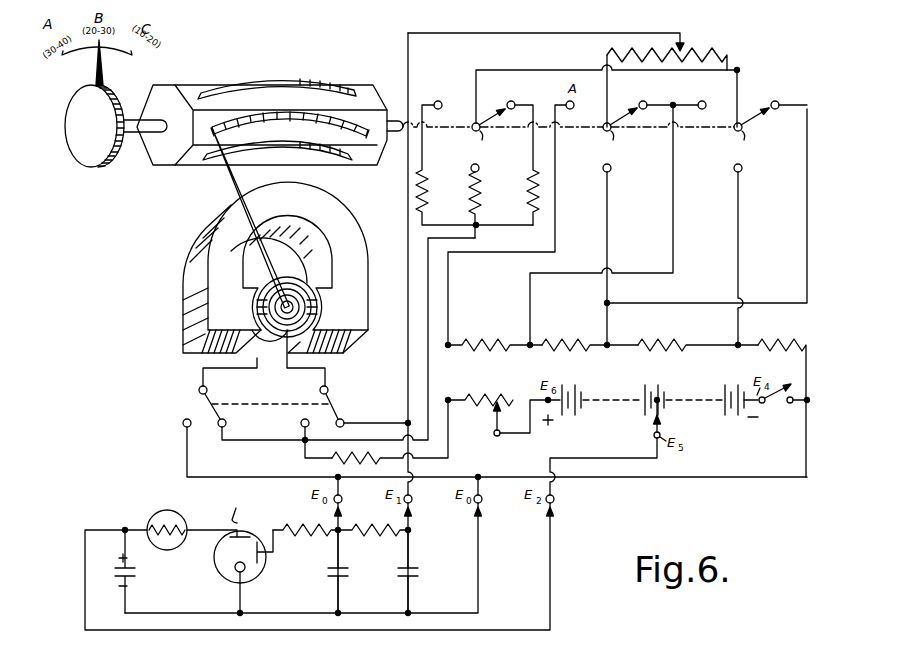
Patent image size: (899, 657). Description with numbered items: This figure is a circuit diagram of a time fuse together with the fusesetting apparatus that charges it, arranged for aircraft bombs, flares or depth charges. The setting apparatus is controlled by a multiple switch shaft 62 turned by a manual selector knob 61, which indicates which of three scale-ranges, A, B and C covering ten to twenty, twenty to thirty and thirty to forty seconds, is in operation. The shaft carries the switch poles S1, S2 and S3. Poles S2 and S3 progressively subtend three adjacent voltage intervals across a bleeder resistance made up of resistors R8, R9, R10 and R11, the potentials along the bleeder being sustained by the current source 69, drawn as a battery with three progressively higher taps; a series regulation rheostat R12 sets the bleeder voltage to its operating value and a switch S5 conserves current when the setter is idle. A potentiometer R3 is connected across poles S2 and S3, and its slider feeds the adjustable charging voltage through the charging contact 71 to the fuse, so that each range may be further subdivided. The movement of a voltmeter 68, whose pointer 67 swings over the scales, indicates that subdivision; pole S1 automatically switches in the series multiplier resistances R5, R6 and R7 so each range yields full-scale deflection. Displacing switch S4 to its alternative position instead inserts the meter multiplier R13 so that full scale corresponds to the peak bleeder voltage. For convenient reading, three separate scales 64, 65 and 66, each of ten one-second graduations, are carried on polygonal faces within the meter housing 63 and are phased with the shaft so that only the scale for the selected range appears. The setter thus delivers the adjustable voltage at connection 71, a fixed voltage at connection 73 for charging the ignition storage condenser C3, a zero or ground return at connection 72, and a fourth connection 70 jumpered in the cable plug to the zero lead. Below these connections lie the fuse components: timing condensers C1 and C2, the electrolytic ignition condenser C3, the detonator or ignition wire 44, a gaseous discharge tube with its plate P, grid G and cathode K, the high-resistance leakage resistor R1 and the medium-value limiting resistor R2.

The detonator or ignition wire 44 is at (153, 516).
The pointer or knob 61 is at (81, 148).
The multiple switch shaft 62 is at (121, 152).
The meter housing 63 is at (166, 92).
The scale 64 is at (257, 87).
The scale 65 is at (286, 110).
The scale 66 is at (347, 160).
The pointer 67 is at (230, 182).
The voltmeter 68 is at (215, 357).
The current source 69 is at (740, 378).
The fourth connection 70 is at (345, 502).
The charging contact 71 is at (414, 502).
The connection 72 is at (485, 502).
The connection 73 is at (556, 502).
The high-resistance leakage resistor R1 is at (376, 509).
The limiting resistor R2 is at (293, 515).
The potentiometer R3 is at (701, 51).
The multiplier resistance R5 is at (474, 165).
The multiplier resistance R6 is at (485, 205).
The multiplier resistance R7 is at (521, 165).
The bleeder resistor R8 is at (478, 328).
The bleeder resistor R9 is at (561, 328).
The bleeder resistor R10 is at (660, 328).
The bleeder resistor R11 is at (760, 328).
The series regulation rheostat R12 is at (483, 388).
The meter multiplier R13 is at (349, 450).
The timing condenser C1 is at (403, 578).
The timing condenser C2 is at (329, 578).
The ignition storage condenser C3 is at (134, 572).
The switch pole S1 is at (476, 128).
The switch pole S2 is at (657, 128).
The switch pole S3 is at (758, 128).
The switch S4 is at (252, 400).
The switch S5 is at (766, 409).
The grid G is at (262, 565).
The cathode K is at (233, 577).
The plate P is at (252, 535).